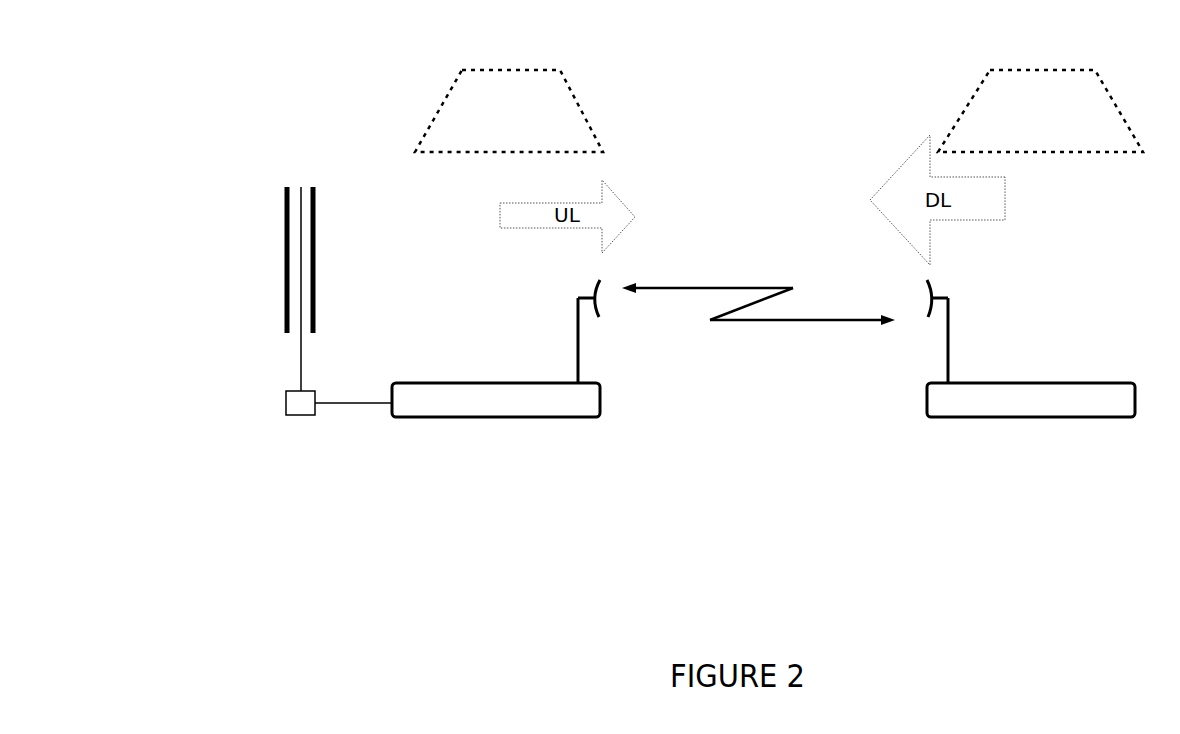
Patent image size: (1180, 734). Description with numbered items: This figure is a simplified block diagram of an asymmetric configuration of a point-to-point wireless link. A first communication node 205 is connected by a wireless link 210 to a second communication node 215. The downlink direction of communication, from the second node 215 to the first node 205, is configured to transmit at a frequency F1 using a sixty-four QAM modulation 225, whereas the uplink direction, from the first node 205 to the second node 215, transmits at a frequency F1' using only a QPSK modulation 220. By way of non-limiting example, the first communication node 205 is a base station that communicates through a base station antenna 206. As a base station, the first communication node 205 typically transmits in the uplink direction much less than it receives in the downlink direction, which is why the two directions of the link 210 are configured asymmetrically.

The first communication node 205 is at (496, 348).
The base station antenna 206 is at (280, 250).
The wireless link 210 is at (758, 304).
The second communication node 215 is at (1031, 348).
The QPSK modulation 220 is at (509, 111).
The 64 QAM modulation 225 is at (1040, 111).